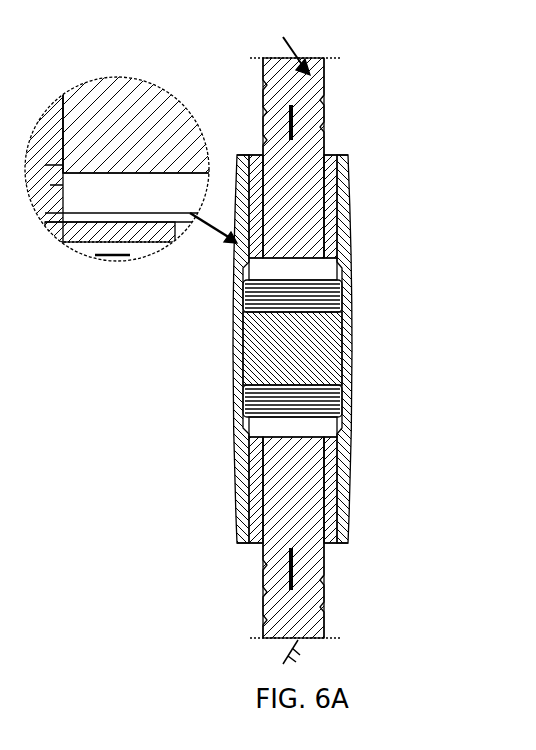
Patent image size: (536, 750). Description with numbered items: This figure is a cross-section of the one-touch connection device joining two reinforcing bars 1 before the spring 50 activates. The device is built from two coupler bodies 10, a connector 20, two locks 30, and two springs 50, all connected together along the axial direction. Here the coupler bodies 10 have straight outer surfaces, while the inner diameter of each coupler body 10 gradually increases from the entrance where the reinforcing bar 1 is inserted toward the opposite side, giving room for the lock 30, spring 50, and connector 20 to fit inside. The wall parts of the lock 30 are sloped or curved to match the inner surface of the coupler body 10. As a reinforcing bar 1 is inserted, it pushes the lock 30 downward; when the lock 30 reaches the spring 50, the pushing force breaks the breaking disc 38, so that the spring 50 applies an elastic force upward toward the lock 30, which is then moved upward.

The reinforcing bar 1 is at (324, 105).
The coupler body 10 is at (349, 213).
The connector 20 is at (352, 355).
The lock 30 is at (535, 237).
The breaking disc 38 is at (70, 223).
The spring 50 is at (352, 297).